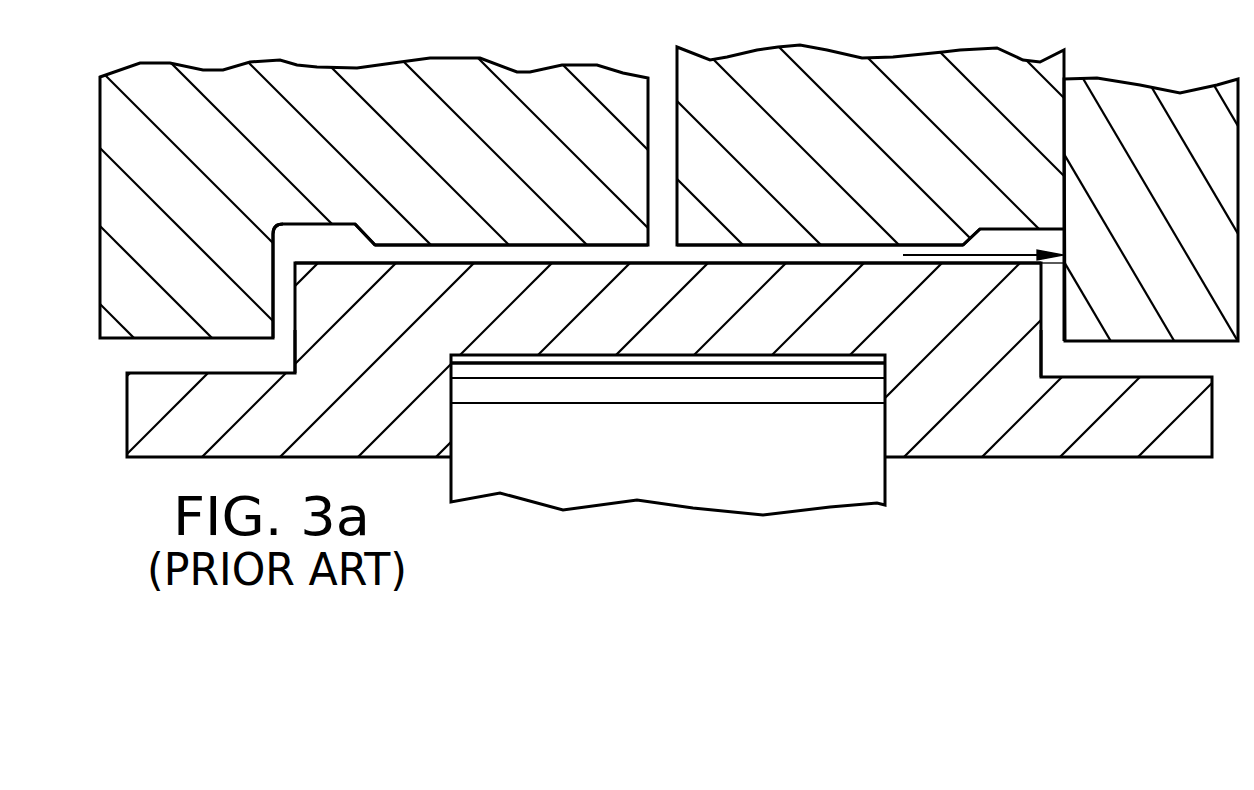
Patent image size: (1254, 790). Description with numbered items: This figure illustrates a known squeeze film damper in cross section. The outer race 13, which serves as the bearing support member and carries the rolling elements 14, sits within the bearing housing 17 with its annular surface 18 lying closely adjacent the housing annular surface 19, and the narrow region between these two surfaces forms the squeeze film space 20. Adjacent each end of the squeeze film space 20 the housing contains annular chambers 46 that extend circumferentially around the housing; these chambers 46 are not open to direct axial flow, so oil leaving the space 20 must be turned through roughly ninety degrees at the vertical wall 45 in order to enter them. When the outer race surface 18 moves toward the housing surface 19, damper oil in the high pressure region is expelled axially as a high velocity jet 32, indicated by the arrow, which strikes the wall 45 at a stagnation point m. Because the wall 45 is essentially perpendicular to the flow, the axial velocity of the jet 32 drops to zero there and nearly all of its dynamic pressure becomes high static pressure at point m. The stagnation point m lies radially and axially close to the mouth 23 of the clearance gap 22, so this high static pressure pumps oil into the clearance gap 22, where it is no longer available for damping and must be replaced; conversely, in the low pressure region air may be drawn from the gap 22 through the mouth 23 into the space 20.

The outer race 13 is at (988, 440).
The rolling elements 14 is at (673, 446).
The bearing housing 17 is at (400, 93).
The annular surface 18 is at (582, 258).
The housing annular surface 19 is at (776, 250).
The squeeze film space 20 is at (453, 255).
The clearance gap 22 is at (273, 350).
The mouth 23 is at (285, 267).
The high velocity jet 32 is at (977, 255).
The vertical wall 45 is at (272, 258).
The annular chambers 46 is at (307, 232).
The stagnation point m is at (1065, 258).